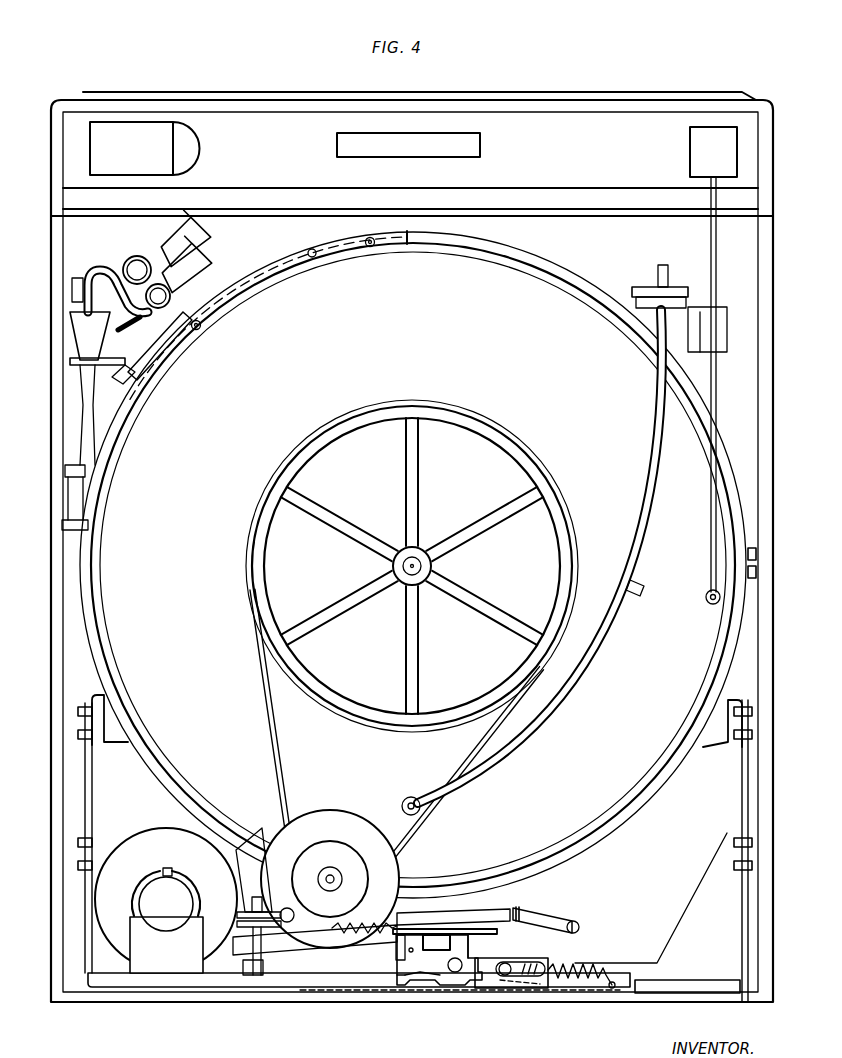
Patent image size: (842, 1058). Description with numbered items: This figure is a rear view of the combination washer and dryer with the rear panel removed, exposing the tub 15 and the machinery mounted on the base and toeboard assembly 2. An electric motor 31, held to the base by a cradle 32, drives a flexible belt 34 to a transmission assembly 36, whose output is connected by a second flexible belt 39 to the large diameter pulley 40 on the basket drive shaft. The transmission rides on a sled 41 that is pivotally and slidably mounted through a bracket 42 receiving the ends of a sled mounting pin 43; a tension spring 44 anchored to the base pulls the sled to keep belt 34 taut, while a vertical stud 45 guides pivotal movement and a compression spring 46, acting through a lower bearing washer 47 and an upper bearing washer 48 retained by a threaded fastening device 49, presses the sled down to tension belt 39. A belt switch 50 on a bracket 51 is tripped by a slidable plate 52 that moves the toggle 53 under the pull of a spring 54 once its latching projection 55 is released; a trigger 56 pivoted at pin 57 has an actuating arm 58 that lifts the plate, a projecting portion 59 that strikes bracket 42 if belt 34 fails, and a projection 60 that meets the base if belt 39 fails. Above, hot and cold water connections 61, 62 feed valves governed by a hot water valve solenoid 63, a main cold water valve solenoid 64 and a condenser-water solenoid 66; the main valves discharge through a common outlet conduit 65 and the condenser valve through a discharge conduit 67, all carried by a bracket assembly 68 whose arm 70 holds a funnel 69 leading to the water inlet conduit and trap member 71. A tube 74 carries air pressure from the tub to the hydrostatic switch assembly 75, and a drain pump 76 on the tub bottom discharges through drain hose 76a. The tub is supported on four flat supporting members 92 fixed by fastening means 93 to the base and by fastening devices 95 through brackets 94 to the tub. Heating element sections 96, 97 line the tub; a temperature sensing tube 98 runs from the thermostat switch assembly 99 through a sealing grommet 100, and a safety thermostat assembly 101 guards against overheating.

The base and toeboard assembly 2 is at (590, 1000).
The tub 15 is at (612, 810).
The electric motor 31 is at (135, 860).
The cradle 32 is at (165, 970).
The flexible belt 34 is at (247, 848).
The transmission assembly 36 is at (340, 813).
The flexible belt 39 is at (283, 738).
The large diameter pulley 40 is at (490, 432).
The sled 41 is at (322, 945).
The bracket 42 is at (530, 985).
The sled mounting pin 43 is at (505, 976).
The tension spring 44 is at (610, 975).
The vertical stud 45 is at (245, 965).
The compression spring 46 is at (225, 930).
The lower bearing washer 47 is at (266, 960).
The upper bearing washer 48 is at (272, 908).
The threaded fastening device 49 is at (255, 902).
The belt switch 50 is at (480, 942).
The bracket 51 is at (413, 955).
The slidable plate 52 is at (465, 928).
The toggle 53 is at (440, 928).
The spring 54 is at (358, 926).
The latching projection 55 is at (417, 928).
The trigger 56 is at (418, 978).
The pin 57 is at (455, 975).
The actuating arm 58 is at (397, 952).
The projecting portion 59 is at (470, 984).
The projection 60 is at (428, 988).
The hot water connection 61 is at (137, 262).
The cold water connection 62 is at (202, 308).
The hot water valve solenoid 63 is at (133, 368).
The main cold water valve solenoid 64 is at (212, 240).
The common outlet conduit 65 is at (78, 278).
The solenoid 66 is at (214, 266).
The discharge conduit 67 is at (104, 270).
The bracket assembly 68 is at (152, 342).
The funnel 69 is at (80, 343).
The arm 70 is at (120, 383).
The water inlet conduit and trap member 71 is at (72, 505).
The tube 74 is at (535, 712).
The hydrostatic diaphragm operated switch assembly 75 is at (652, 287).
The drain pump 76 is at (515, 915).
The drain hose 76a is at (580, 928).
The supporting members 92 is at (93, 790).
The fastening means 93 is at (78, 865).
The bracket 94 is at (98, 694).
The fastening devices 95 is at (78, 735).
The heating element section 96 is at (235, 292).
The heating element section 97 is at (388, 243).
The temperature sensing tube 98 is at (717, 290).
The thermostat switch assembly 99 is at (690, 160).
The sealing grommet 100 is at (706, 599).
The safety thermostat assembly 101 is at (758, 566).